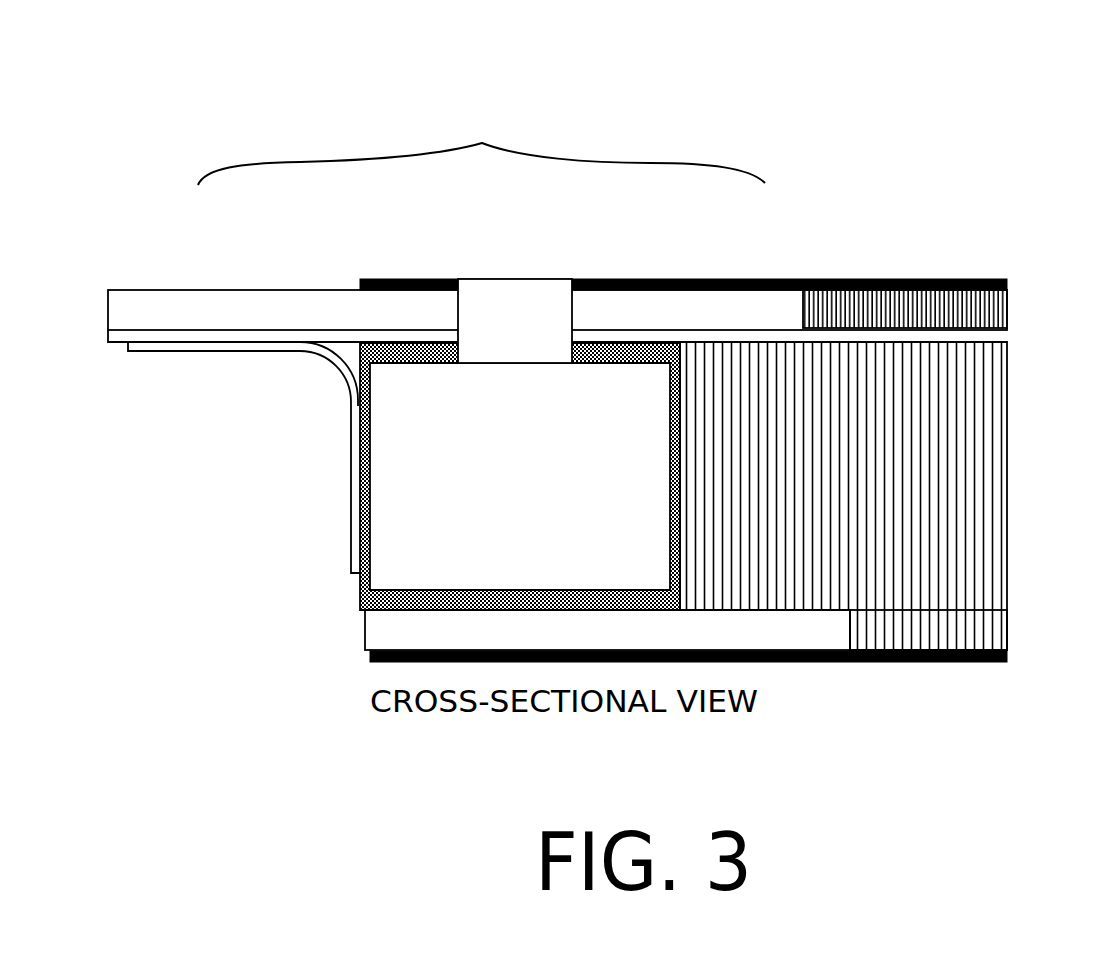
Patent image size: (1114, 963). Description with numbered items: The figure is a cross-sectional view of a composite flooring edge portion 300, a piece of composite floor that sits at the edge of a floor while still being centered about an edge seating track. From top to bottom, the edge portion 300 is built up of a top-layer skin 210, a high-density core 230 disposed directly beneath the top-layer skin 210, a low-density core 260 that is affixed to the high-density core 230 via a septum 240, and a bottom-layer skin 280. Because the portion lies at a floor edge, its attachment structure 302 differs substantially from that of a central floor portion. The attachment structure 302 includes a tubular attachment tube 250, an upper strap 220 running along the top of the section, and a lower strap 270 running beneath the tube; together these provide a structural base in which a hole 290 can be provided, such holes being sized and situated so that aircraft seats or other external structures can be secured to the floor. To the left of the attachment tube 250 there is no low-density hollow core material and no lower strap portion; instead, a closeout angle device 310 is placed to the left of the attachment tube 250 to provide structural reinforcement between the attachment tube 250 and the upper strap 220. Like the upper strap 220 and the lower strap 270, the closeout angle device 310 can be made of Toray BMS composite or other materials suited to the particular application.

The composite flooring edge portion 300 is at (680, 100).
The attachment structure 302 is at (481, 143).
The top-layer skin 210 is at (750, 280).
The upper strap 220 is at (344, 326).
The high-density core 230 is at (1012, 302).
The septum 240 is at (1009, 337).
The attachment tube 250 is at (400, 590).
The low-density core 260 is at (964, 602).
The lower strap 270 is at (652, 645).
The bottom-layer skin 280 is at (795, 666).
The hole 290 is at (539, 338).
The closeout angle device 310 is at (319, 367).